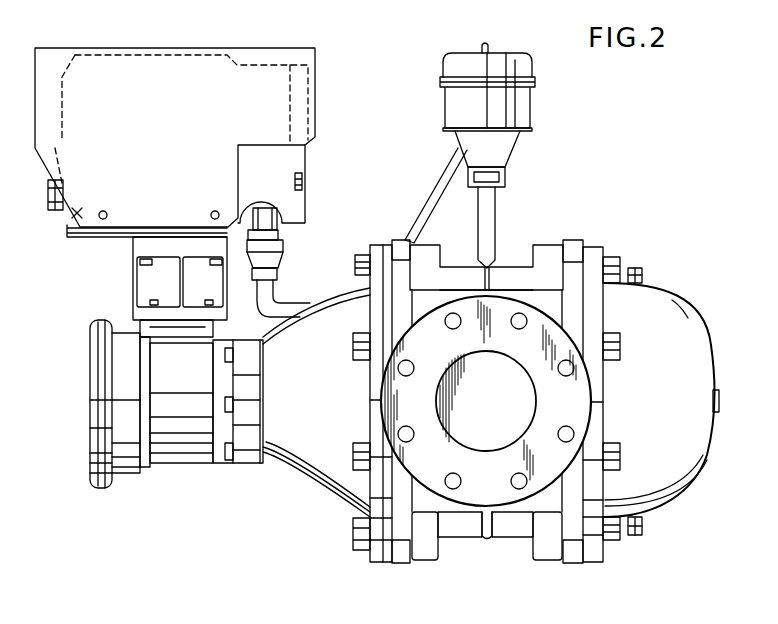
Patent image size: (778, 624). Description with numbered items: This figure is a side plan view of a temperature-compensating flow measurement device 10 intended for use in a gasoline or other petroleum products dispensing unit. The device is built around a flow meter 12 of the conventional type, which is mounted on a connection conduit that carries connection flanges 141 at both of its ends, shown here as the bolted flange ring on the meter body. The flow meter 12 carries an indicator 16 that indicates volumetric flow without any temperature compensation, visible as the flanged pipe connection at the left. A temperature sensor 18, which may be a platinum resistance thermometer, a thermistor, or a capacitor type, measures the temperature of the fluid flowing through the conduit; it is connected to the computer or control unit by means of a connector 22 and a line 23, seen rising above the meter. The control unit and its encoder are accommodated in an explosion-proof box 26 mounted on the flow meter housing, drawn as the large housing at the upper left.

The temperature-compensating flow measurement device 10 is at (285, 515).
The flow meter 12 is at (425, 503).
The connection flanges 141 is at (497, 490).
The indicator 16 is at (90, 407).
The temperature sensor 18 is at (488, 245).
The connector 22 is at (462, 58).
The line 23 is at (407, 200).
The explosion-proof box 26 is at (133, 280).